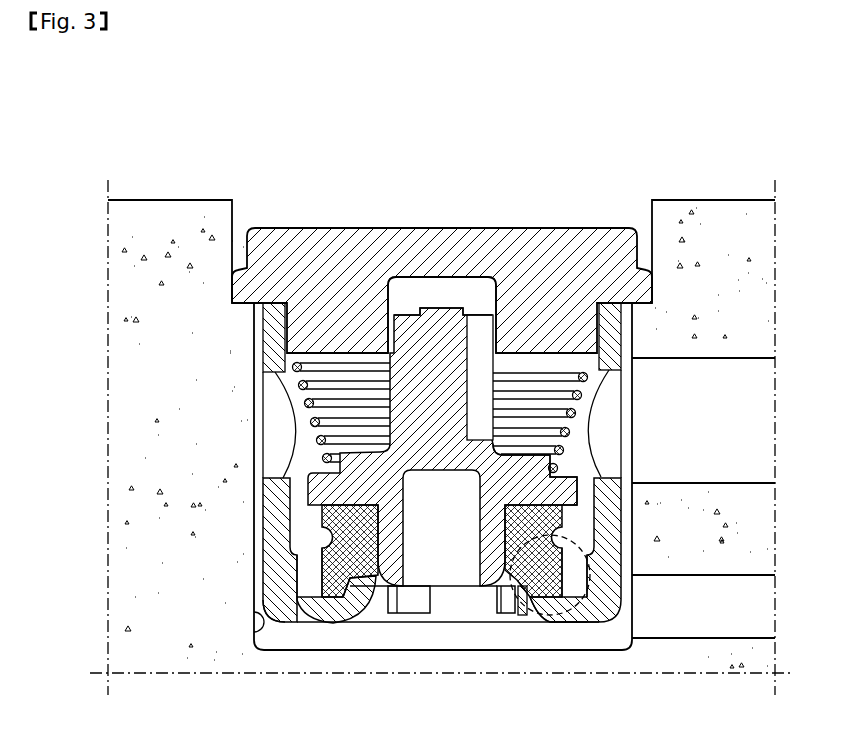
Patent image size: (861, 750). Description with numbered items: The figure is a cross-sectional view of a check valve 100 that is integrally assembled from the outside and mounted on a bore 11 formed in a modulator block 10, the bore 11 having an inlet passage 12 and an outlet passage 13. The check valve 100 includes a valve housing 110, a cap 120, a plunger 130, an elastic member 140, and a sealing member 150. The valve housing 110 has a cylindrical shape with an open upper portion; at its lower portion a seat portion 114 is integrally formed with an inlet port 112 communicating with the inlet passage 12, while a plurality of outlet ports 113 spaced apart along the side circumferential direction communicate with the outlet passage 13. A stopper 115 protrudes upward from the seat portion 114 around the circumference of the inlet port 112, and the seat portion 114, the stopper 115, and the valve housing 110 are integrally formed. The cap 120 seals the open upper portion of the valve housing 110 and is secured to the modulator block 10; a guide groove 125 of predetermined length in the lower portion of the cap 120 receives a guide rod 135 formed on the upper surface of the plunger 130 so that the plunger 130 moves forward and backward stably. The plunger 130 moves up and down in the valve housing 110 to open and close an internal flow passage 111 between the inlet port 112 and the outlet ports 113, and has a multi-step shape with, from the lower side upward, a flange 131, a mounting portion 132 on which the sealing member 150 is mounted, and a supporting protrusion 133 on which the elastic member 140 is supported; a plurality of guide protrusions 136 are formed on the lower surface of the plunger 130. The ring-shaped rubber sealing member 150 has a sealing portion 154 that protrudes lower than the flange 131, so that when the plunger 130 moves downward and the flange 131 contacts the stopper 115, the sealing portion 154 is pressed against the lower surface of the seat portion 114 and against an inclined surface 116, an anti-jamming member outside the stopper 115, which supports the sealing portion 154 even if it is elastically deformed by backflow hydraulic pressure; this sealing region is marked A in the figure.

The check valve 100 is at (566, 190).
The modulator block 10 is at (122, 232).
The bore 11 is at (253, 632).
The inlet passage 12 is at (712, 614).
The outlet passage 13 is at (710, 438).
The valve housing 110 is at (268, 517).
The internal flow passage 111 is at (584, 520).
The inlet port 112 is at (458, 600).
The outlet port 113 is at (281, 424).
The seat portion 114 is at (333, 602).
The stopper 115 is at (363, 598).
The inclined surface 116 is at (534, 605).
The cap 120 is at (305, 225).
The guide groove 125 is at (410, 288).
The plunger 130 is at (328, 495).
The flange 131 is at (521, 590).
The mounting portion 132 is at (378, 540).
The supporting protrusion 133 is at (568, 474).
The guide rod 135 is at (441, 318).
The guide protrusions 136 is at (511, 600).
The elastic member 140 is at (296, 364).
The sealing member 150 is at (310, 545).
The sealing portion 154 is at (318, 612).
The detail region A is at (579, 598).